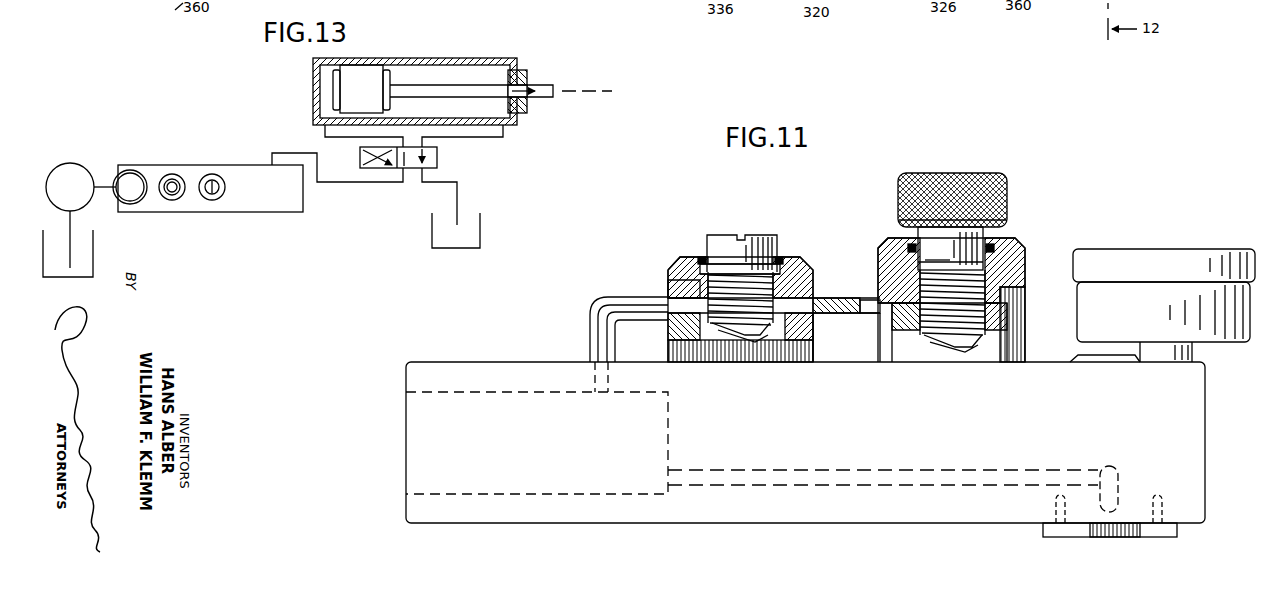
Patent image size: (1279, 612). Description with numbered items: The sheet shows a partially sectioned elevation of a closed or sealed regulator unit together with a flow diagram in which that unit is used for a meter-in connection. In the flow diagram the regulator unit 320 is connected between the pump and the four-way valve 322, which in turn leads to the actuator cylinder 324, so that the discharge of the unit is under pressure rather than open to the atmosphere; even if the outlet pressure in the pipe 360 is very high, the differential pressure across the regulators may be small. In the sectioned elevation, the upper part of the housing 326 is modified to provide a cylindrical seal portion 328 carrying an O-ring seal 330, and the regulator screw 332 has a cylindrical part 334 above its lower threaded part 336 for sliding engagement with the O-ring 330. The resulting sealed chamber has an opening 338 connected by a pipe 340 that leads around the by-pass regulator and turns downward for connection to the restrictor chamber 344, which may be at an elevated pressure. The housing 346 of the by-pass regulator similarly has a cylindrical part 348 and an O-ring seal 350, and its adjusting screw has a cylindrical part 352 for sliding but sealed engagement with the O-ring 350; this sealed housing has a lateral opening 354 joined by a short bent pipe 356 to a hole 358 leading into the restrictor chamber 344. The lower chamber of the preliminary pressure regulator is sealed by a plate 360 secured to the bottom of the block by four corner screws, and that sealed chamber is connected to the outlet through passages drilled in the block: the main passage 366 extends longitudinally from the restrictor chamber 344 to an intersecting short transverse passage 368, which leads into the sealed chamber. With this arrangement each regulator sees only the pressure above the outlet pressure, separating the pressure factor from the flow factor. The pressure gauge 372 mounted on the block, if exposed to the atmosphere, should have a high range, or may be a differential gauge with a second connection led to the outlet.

In FIG. 13, the regulator unit 320 is at (224, 214).
In FIG. 11, the regulator unit 320 is at (1212, 432).
In FIG. 13, the four-way valve 322 is at (437, 158).
In FIG. 13, the actuator cylinder 324 is at (438, 58).
In FIG. 11, the housing 326 is at (1018, 262).
In FIG. 11, the cylindrical seal portion 328 is at (985, 264).
In FIG. 11, the O-ring seal 330 is at (990, 252).
In FIG. 11, the regulator screw 332 is at (1007, 188).
In FIG. 11, the cylindrical part 334 is at (950, 248).
In FIG. 11, the lower threaded part 336 is at (986, 292).
In FIG. 11, the opening 338 is at (880, 330).
In FIG. 11, the pipe 340 is at (832, 298).
In FIG. 11, the restrictor chamber 344 is at (668, 412).
In FIG. 11, the housing of the by-pass regulator 346 is at (800, 262).
In FIG. 11, the cylindrical part 348 is at (786, 275).
In FIG. 11, the O-ring seal 350 is at (780, 262).
In FIG. 11, the cylindrical part 352 is at (707, 246).
In FIG. 11, the lateral opening 354 is at (672, 274).
In FIG. 11, the short bent pipe 356 is at (598, 298).
In FIG. 11, the hole 358 is at (610, 381).
In FIG. 13, the plate 360 is at (343, 182).
In FIG. 11, the plate 360 is at (1125, 537).
In FIG. 11, the main passage 366 is at (858, 468).
In FIG. 11, the short transverse passage 368 is at (1120, 481).
In FIG. 11, the pressure gauge 372 is at (1192, 249).